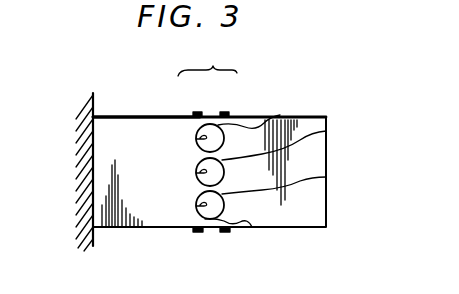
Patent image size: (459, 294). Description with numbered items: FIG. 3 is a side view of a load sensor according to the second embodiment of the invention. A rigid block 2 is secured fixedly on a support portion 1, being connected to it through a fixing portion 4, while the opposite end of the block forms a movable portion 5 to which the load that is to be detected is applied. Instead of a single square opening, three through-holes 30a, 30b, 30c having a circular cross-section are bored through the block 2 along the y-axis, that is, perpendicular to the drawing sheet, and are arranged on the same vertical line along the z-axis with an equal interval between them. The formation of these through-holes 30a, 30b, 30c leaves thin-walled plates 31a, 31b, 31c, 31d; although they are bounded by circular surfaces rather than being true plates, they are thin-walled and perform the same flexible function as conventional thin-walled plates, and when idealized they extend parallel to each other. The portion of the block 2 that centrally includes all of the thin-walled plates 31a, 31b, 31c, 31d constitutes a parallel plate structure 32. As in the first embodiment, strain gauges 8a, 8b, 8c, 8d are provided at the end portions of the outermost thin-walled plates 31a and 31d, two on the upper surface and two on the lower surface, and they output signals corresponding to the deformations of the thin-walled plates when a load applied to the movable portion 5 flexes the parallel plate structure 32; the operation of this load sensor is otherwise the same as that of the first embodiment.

The support portion 1 is at (77, 143).
The rigid block 2 is at (115, 117).
The fixing portion 4 is at (124, 209).
The movable portion 5 is at (301, 211).
The strain gauge 8a is at (197, 112).
The strain gauge 8b is at (225, 112).
The strain gauge 8c is at (197, 232).
The strain gauge 8d is at (226, 232).
The through-hole 30a is at (196, 139).
The through-hole 30b is at (196, 173).
The through-hole 30c is at (196, 206).
The thin-walled plate 31a is at (280, 115).
The thin-walled plate 31b is at (326, 131).
The thin-walled plate 31c is at (326, 177).
The thin-walled plate 31d is at (252, 227).
The parallel plate structure 32 is at (207, 60).